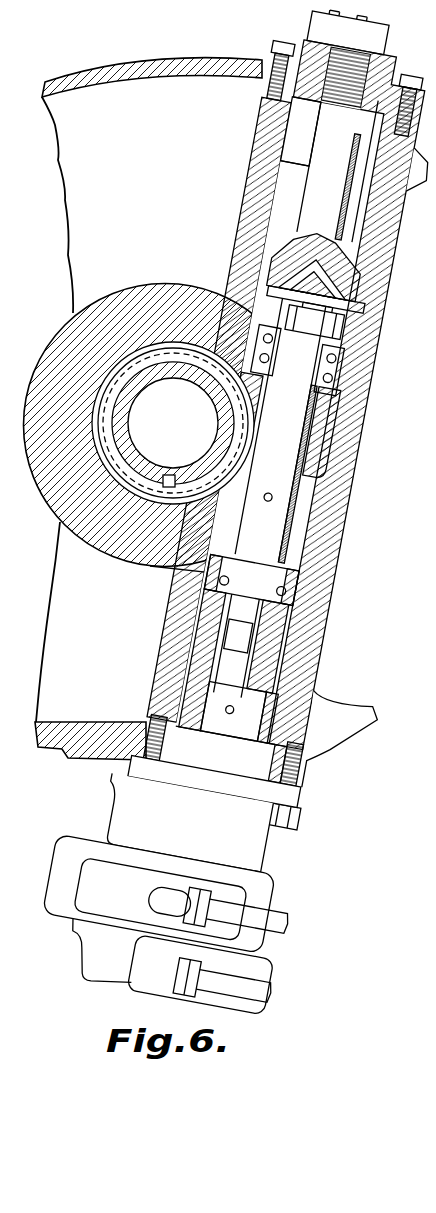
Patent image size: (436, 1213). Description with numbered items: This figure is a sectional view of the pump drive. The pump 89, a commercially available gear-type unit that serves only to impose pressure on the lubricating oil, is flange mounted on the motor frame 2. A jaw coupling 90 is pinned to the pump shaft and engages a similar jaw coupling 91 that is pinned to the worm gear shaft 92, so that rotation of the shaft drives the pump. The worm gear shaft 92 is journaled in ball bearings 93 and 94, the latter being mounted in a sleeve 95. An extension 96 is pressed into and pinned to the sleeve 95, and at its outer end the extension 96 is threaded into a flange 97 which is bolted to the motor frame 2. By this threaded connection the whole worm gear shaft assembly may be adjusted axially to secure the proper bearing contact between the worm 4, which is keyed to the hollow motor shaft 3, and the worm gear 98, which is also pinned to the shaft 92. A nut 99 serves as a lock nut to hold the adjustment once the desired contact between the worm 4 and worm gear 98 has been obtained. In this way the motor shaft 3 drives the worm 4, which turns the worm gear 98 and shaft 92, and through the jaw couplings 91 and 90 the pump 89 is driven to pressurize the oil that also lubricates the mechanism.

The motor frame 2 is at (82, 722).
The hollow motor shaft 3 is at (150, 478).
The worm 4 is at (176, 348).
The pump 89 is at (275, 940).
The jaw coupling 90 is at (200, 678).
The jaw coupling 91 is at (270, 661).
The worm gear shaft 92 is at (290, 546).
The ball bearing 93 is at (295, 595).
The ball bearing 94 is at (335, 358).
The sleeve 95 is at (330, 384).
The extension 96 is at (310, 162).
The flange 97 is at (310, 44).
The worm gear 98 is at (305, 496).
The nut 99 is at (399, 46).